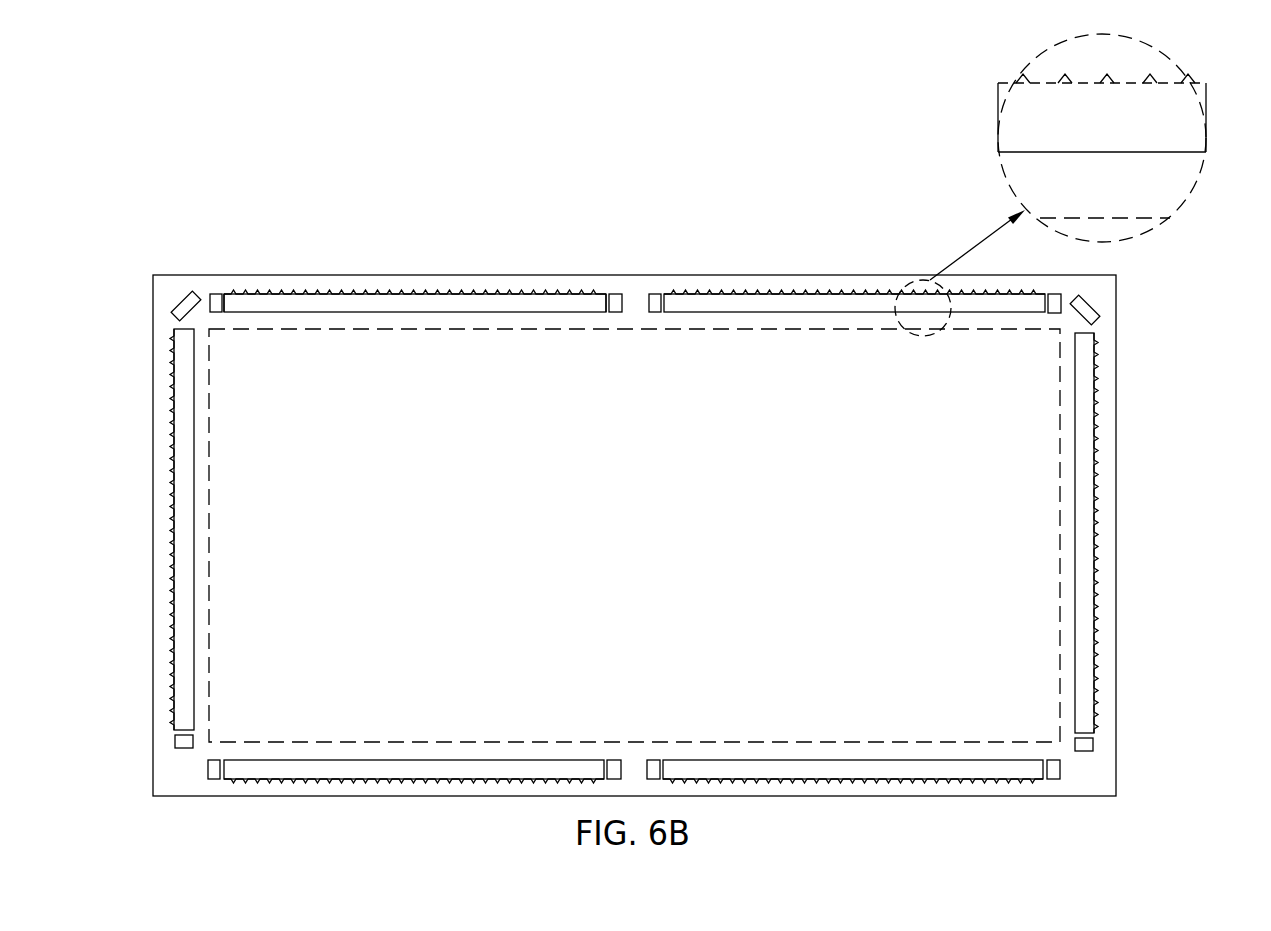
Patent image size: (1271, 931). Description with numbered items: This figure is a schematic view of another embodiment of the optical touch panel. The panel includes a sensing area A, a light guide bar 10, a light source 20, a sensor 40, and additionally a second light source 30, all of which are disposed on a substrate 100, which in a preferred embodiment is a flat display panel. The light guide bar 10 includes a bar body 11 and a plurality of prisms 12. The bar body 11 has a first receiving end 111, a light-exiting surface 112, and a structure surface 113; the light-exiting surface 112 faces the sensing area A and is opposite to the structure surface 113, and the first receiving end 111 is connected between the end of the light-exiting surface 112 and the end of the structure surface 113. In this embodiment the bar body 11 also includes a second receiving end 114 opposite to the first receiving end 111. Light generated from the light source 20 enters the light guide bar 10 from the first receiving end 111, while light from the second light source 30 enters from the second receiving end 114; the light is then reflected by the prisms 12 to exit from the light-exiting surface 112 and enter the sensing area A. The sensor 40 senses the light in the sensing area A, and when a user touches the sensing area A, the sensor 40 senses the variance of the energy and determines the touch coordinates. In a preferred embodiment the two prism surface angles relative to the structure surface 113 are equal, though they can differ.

The substrate 100 is at (1078, 772).
The light guide bar 10 is at (320, 780).
The bar body 11 is at (1012, 122).
The first receiving end 111 is at (225, 300).
The light-exiting surface 112 is at (1013, 152).
The structure surface 113 is at (272, 293).
The second receiving end 114 is at (608, 295).
The prism 12 is at (1147, 82).
The light source 20 is at (213, 293).
The second light source 30 is at (617, 295).
The sensor 40 is at (1094, 320).
The sensing area A is at (910, 742).